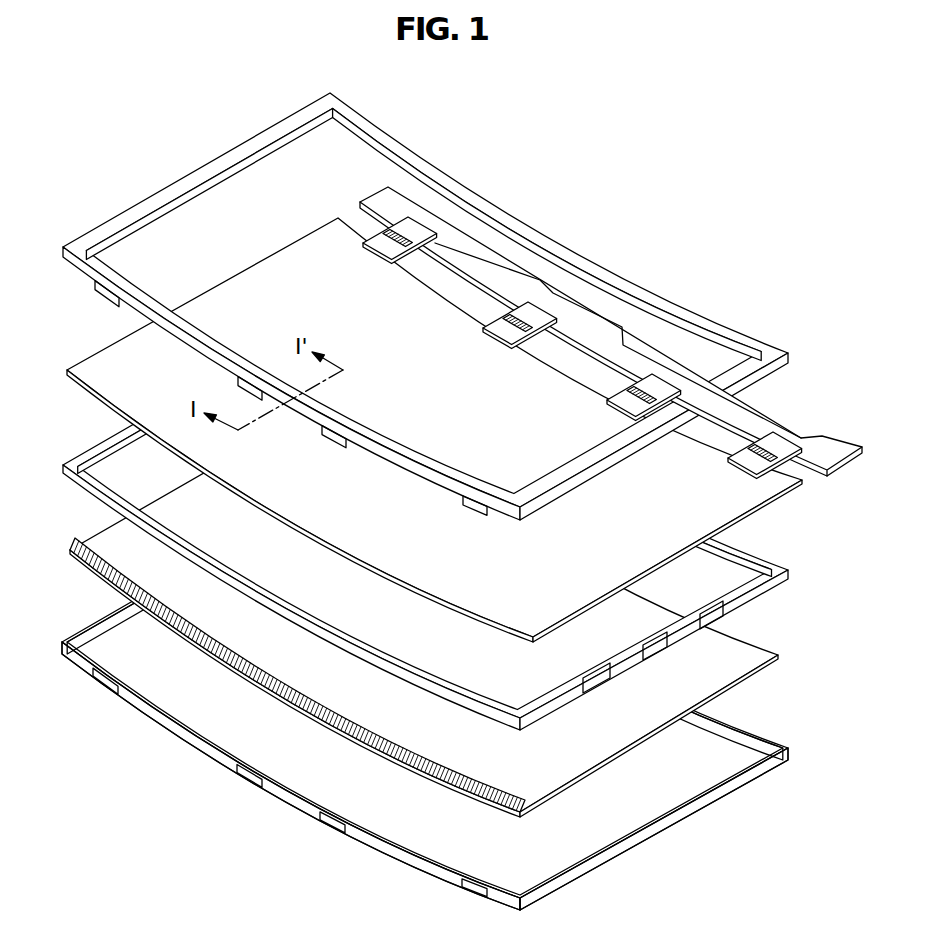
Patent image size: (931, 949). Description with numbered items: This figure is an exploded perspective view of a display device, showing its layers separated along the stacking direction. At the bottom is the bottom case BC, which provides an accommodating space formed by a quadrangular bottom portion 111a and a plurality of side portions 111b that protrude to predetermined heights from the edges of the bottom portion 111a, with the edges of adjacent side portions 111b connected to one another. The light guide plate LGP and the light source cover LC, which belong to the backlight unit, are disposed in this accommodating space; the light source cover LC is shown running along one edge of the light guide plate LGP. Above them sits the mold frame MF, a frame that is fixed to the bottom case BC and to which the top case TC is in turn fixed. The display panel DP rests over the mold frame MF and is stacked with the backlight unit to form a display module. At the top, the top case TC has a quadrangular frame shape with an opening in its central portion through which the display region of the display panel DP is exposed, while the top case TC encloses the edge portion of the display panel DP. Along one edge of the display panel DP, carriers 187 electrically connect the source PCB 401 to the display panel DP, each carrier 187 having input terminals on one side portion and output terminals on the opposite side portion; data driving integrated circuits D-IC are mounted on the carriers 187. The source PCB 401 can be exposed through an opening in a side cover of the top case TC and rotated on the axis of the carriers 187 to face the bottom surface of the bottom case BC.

The top case TC is at (776, 367).
The source PCB 401 is at (758, 425).
The display panel DP is at (740, 497).
The mold frame MF is at (770, 586).
The light guide plate LGP is at (750, 655).
The light source cover LC is at (83, 562).
The bottom case BC is at (776, 762).
The bottom portion 111a is at (635, 806).
The side portions 111b is at (742, 727).
The carriers 187 is at (418, 240).
The data driving integrated circuits D-IC is at (397, 237).